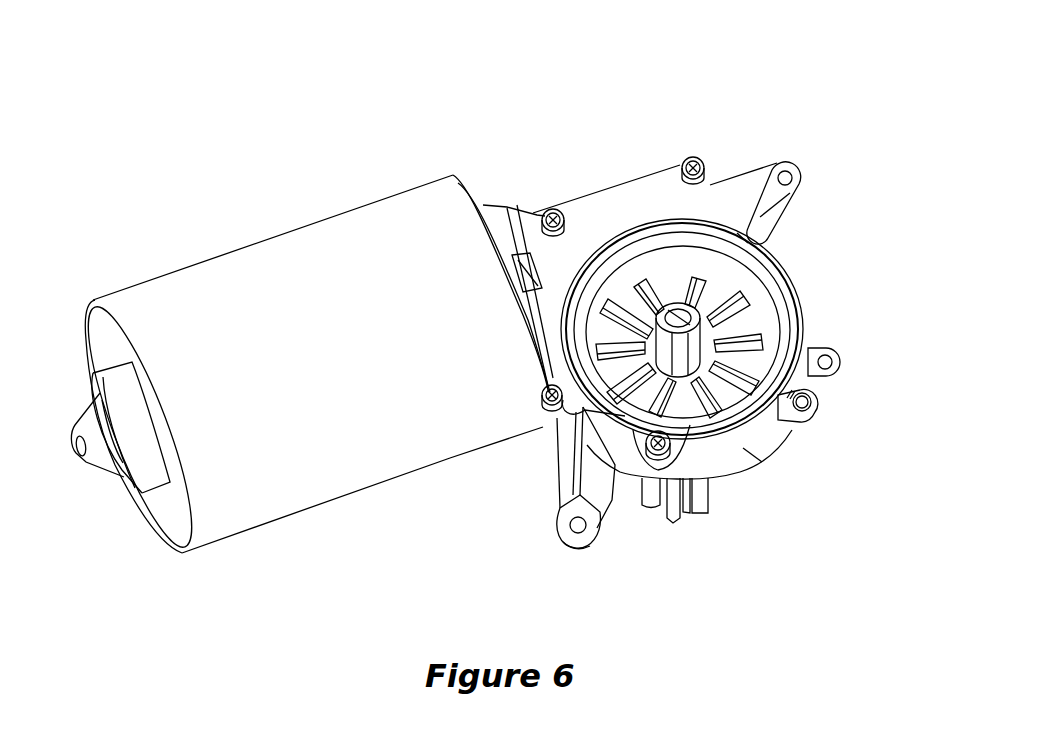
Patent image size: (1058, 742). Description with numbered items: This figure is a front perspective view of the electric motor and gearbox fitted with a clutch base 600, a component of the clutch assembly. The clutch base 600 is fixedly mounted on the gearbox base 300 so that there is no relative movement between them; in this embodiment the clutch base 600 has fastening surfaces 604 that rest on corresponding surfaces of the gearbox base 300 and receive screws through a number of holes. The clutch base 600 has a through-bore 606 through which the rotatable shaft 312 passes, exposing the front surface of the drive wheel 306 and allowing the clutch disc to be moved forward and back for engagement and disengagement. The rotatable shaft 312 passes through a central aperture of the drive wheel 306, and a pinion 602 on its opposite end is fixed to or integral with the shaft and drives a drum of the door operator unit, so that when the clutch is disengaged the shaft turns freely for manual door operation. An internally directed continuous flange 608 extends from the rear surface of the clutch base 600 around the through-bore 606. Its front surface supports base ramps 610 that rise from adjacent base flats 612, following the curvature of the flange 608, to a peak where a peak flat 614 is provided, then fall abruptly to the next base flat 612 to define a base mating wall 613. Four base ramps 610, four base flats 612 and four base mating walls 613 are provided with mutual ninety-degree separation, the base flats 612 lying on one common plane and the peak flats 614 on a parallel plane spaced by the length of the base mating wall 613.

The gearbox base 300 is at (762, 462).
The drive wheel 306 is at (730, 330).
The rotatable shaft 312 is at (690, 306).
The clutch base 600 is at (577, 227).
The pinion 602 is at (692, 508).
The fastening surfaces 604 is at (783, 170).
The through-bore 606 is at (607, 285).
The flange 608 is at (783, 362).
The base ramps 610 is at (702, 250).
The base flats 612 is at (646, 262).
The base mating wall 613 is at (555, 418).
The peak flat 614 is at (668, 243).